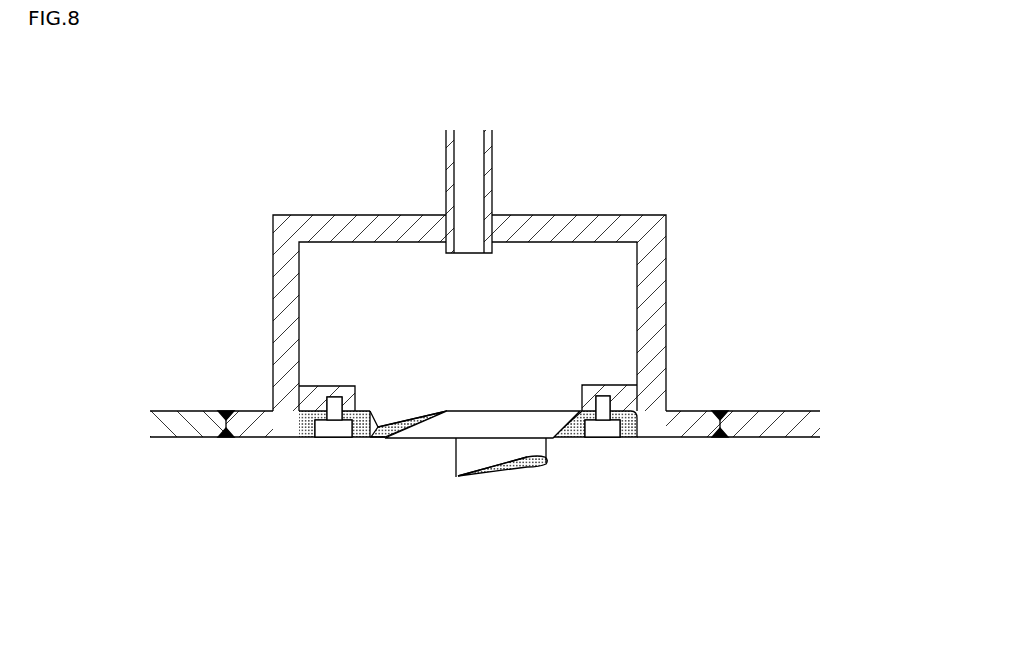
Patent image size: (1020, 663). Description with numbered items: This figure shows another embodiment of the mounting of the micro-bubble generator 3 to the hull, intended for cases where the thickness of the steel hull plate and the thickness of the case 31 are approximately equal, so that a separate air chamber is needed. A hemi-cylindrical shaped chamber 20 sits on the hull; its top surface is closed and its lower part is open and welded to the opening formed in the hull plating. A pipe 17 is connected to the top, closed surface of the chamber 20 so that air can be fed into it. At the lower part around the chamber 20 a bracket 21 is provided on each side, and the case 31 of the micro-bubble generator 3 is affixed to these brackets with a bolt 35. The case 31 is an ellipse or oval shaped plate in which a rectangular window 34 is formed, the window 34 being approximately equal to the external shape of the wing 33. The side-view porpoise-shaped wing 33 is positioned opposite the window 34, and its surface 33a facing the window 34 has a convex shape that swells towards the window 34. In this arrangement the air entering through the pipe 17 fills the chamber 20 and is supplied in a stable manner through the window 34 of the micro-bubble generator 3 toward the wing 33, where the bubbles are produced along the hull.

The micro-bubble generator 3 is at (510, 522).
The pipe 17 is at (445, 163).
The hemi-cylindrical shaped chamber 20 is at (282, 285).
The bracket 21 is at (330, 392).
The plate 31 is at (362, 438).
The wing 33 is at (523, 470).
The surface 33a is at (505, 460).
The window 34 is at (505, 422).
The bolt 35 is at (607, 438).